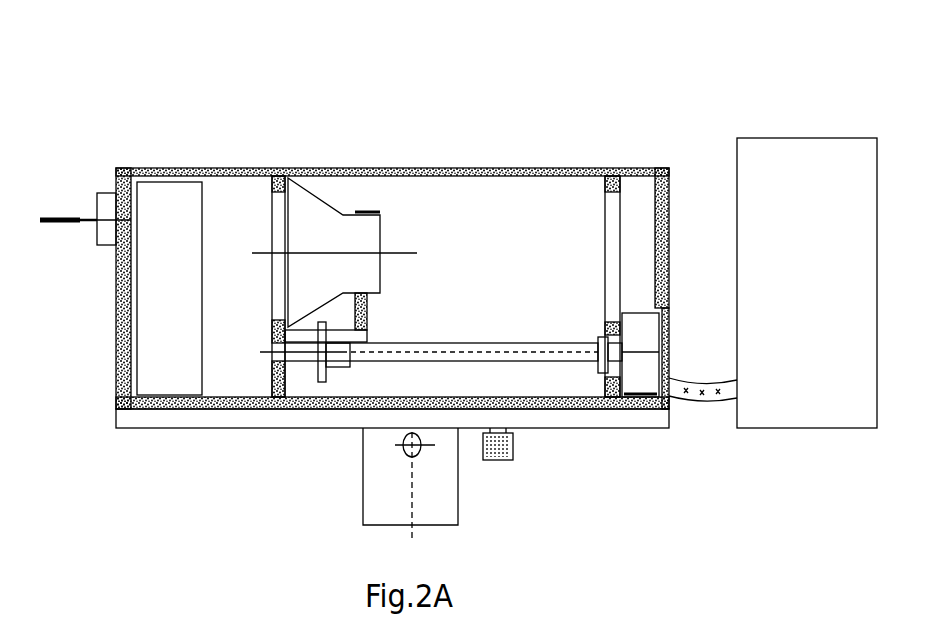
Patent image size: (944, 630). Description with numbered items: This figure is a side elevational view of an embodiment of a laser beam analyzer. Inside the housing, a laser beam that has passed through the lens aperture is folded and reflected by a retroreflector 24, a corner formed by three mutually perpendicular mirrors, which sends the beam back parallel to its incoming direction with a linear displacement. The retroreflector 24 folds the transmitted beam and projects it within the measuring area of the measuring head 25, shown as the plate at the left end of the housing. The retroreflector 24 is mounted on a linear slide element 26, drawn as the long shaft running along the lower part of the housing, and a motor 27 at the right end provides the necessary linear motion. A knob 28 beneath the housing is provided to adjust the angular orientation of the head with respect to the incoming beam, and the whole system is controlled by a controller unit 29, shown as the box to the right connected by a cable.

The retroreflector 24 is at (310, 190).
The measuring head 25 is at (201, 213).
The linear slide element 26 is at (445, 343).
The motor 27 is at (630, 308).
The knob 28 is at (422, 457).
The controller unit 29 is at (794, 136).